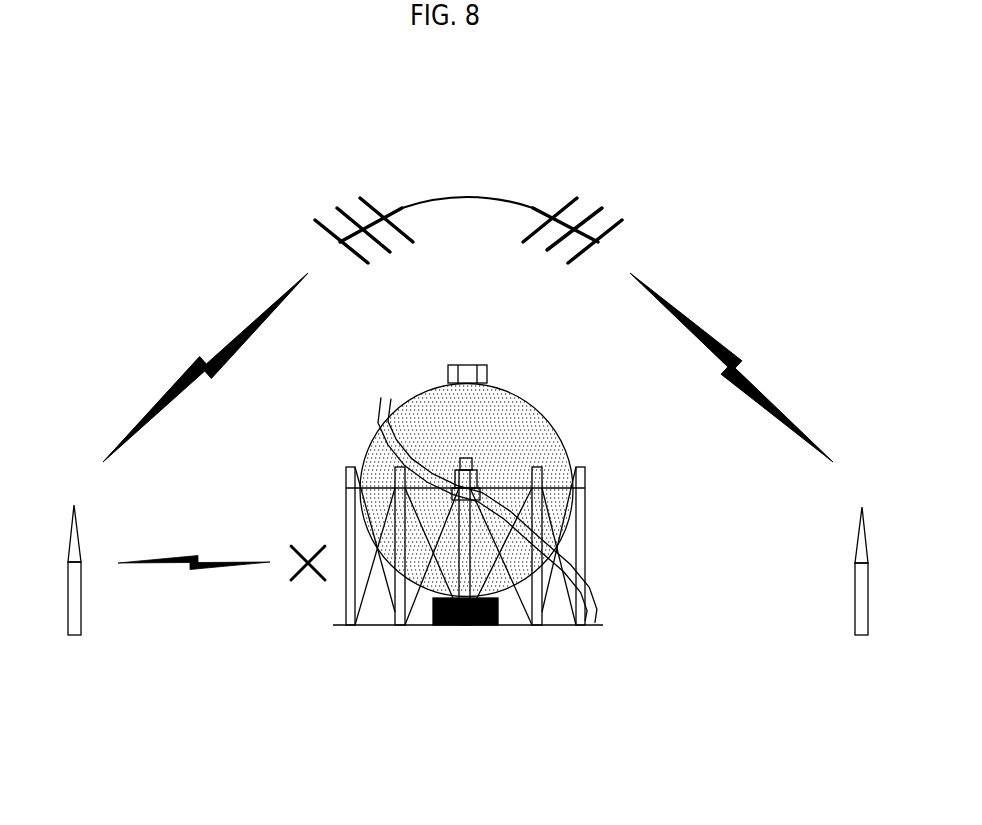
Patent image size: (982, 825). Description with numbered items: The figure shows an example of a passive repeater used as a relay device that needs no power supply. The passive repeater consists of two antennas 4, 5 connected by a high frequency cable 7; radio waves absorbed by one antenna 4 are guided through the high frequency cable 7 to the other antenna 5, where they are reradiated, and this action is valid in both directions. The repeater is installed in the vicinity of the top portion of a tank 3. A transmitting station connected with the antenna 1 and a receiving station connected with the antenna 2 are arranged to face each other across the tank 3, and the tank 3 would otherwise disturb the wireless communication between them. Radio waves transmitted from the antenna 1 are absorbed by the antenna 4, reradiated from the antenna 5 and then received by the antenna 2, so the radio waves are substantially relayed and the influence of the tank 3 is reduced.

The antenna 1 is at (81, 605).
The antenna 2 is at (855, 612).
The tank 3 is at (560, 421).
The antenna 4 is at (378, 199).
The antenna 5 is at (555, 202).
The high frequency cable 7 is at (465, 203).